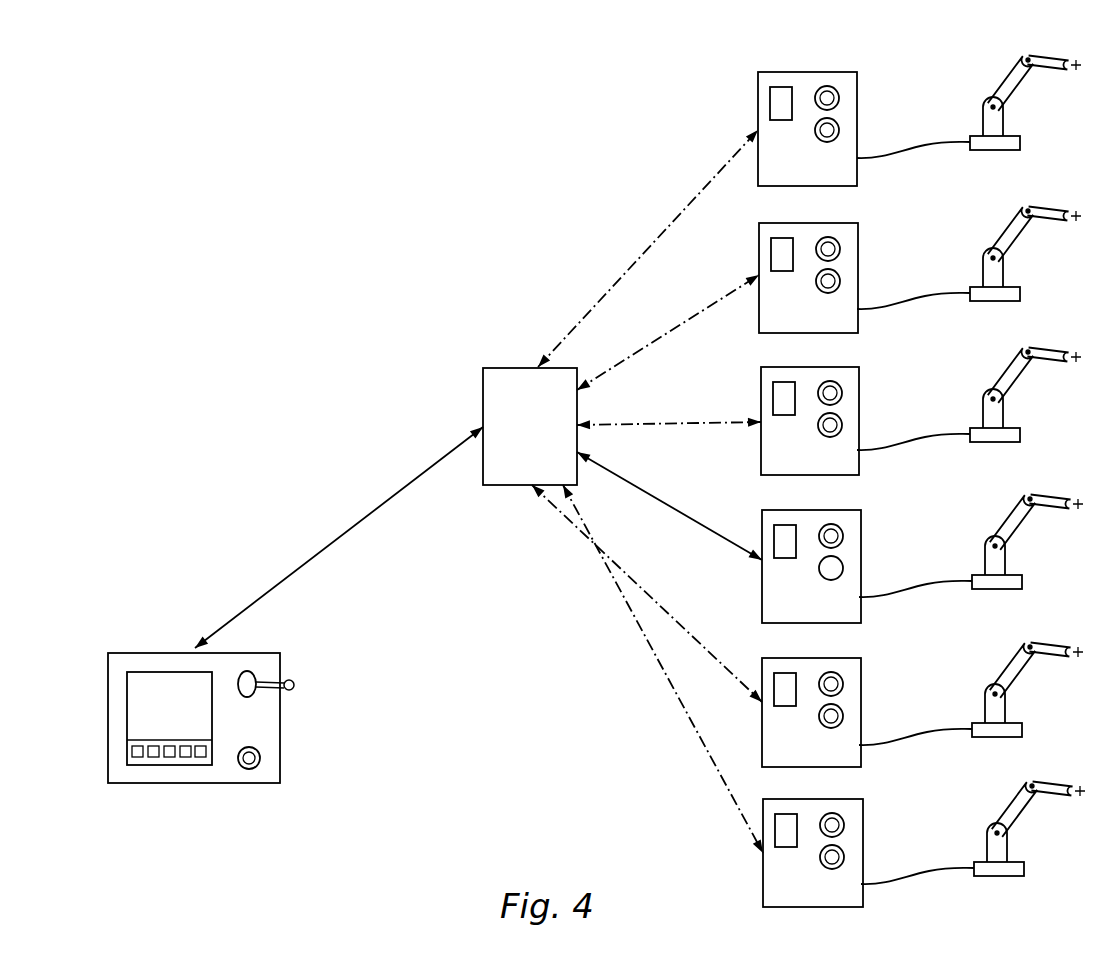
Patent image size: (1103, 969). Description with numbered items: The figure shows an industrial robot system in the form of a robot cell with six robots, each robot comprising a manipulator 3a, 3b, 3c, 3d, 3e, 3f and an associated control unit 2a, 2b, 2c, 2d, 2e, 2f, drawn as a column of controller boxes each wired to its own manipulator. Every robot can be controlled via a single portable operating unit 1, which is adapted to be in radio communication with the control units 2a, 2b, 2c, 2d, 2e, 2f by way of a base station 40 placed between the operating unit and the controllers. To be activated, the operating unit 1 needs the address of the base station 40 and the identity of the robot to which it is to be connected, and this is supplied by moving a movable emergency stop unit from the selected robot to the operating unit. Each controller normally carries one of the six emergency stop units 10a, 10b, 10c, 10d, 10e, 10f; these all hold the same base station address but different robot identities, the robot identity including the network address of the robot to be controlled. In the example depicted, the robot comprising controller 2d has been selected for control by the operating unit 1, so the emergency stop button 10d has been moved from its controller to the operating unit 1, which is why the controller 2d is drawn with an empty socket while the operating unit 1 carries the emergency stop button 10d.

The portable operating unit 1 is at (137, 660).
The base station 40 is at (497, 393).
The control unit 2a is at (848, 85).
The control unit 2b is at (849, 236).
The control unit 2c is at (851, 380).
The control unit 2d is at (852, 523).
The control unit 2e is at (852, 671).
The control unit 2f is at (853, 812).
The manipulator 3a is at (1023, 83).
The manipulator 3b is at (970, 258).
The manipulator 3c is at (969, 399).
The manipulator 3d is at (972, 546).
The manipulator 3e is at (972, 694).
The manipulator 3f is at (973, 833).
The emergency stop unit 10a is at (837, 128).
The emergency stop unit 10b is at (838, 279).
The emergency stop unit 10c is at (840, 423).
The emergency stop button 10d is at (262, 756).
The emergency stop unit 10e is at (841, 714).
The emergency stop unit 10f is at (842, 855).